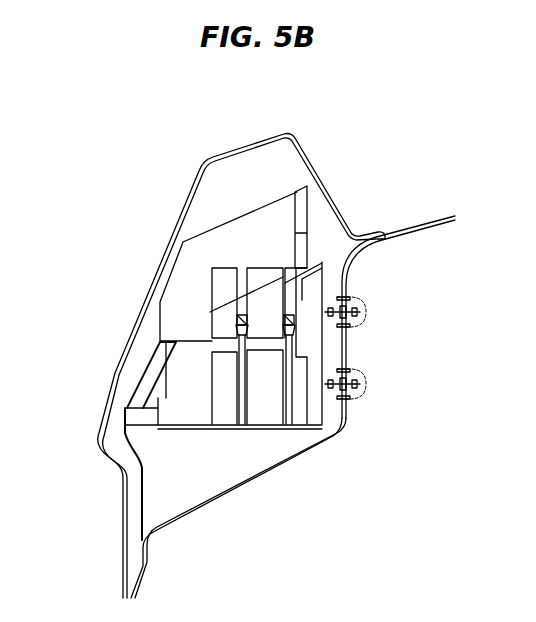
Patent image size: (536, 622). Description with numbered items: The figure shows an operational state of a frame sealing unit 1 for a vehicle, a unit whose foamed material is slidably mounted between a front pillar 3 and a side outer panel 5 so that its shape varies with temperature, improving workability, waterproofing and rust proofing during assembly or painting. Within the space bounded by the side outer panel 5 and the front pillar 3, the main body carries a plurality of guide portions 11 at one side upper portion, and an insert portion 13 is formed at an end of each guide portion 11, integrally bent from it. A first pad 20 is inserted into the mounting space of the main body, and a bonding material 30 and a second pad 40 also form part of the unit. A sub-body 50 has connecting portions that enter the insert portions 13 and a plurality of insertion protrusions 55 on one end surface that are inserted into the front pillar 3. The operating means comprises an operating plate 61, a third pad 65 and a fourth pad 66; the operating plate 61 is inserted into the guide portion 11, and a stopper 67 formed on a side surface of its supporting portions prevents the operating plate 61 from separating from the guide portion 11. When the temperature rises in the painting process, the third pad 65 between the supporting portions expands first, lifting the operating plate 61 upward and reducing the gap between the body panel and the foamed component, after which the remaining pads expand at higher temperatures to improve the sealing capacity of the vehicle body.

The frame sealing unit 1 is at (245, 172).
The front pillar 3 is at (376, 248).
The side outer panel 5 is at (181, 218).
The guide portion 11 is at (223, 390).
The insert portion 13 is at (172, 440).
The first pad 20 is at (314, 410).
The bonding material 30 is at (163, 483).
The second pad 40 is at (160, 372).
The sub-body 50 is at (150, 346).
The insertion protrusion 55 is at (365, 312).
The operating plate 61 is at (197, 263).
The third pad 65 is at (266, 410).
The fourth pad 66 is at (304, 210).
The stopper 67 is at (205, 349).